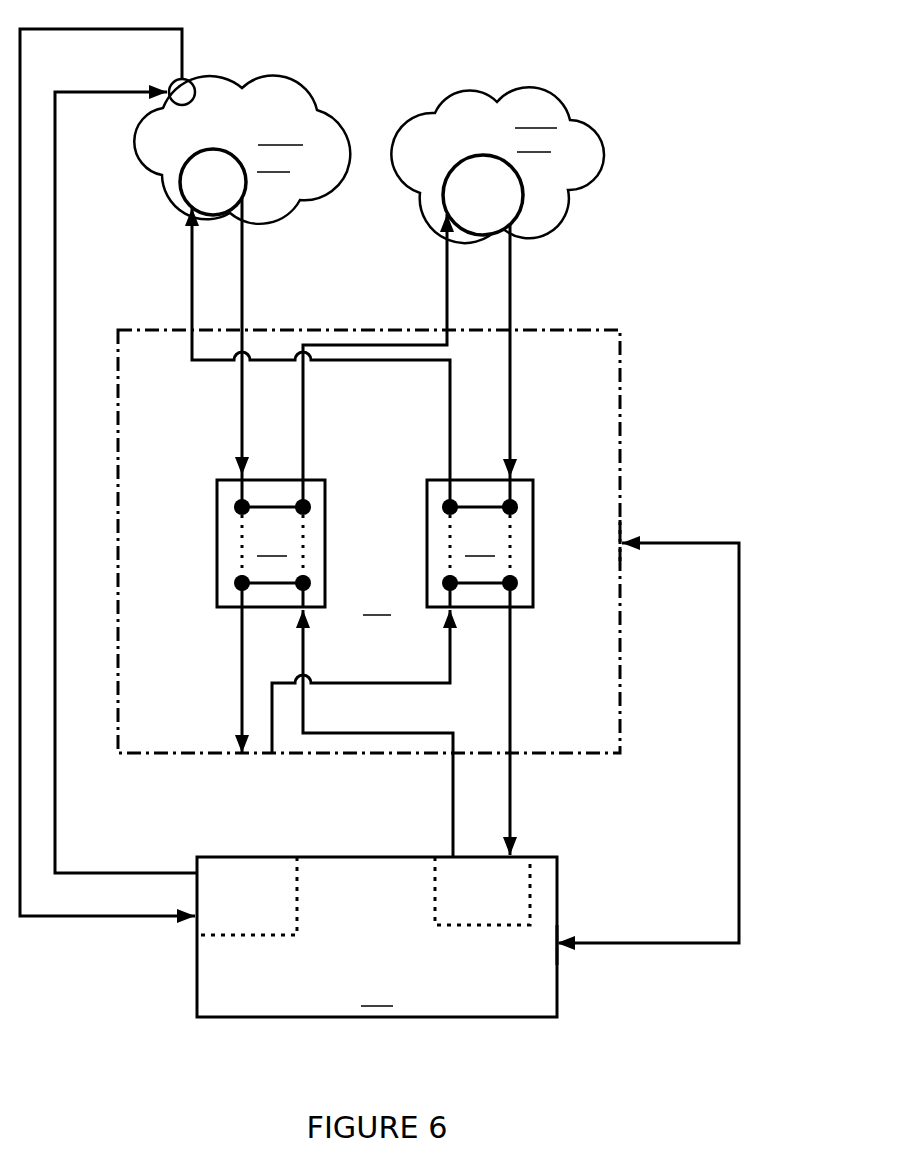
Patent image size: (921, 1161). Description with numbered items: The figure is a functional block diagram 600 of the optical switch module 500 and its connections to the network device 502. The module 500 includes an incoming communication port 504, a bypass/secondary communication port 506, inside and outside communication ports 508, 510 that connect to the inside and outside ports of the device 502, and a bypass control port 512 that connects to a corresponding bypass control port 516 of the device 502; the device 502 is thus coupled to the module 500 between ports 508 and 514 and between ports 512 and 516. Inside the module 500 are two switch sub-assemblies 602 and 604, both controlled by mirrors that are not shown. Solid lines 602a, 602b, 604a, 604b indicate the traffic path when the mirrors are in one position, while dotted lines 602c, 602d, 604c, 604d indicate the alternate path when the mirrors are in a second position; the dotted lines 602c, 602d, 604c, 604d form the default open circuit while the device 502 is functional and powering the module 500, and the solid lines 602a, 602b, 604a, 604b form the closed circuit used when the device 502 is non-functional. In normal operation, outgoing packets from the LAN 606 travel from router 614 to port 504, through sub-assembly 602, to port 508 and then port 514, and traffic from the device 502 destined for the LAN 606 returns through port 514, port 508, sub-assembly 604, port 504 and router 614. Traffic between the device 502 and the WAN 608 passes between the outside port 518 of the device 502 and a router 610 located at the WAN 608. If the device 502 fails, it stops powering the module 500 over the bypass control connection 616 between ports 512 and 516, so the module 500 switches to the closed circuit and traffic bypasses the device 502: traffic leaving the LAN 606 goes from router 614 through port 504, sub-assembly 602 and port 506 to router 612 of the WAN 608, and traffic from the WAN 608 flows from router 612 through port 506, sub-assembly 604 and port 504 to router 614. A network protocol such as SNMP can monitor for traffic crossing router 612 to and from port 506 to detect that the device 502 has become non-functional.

The optical switch module 500 is at (369, 541).
The network device 502 is at (377, 937).
The incoming communication port 504 is at (480, 326).
The bypass/secondary communication port 506 is at (217, 326).
The inside communication port 508 is at (482, 760).
The outside communication port 510 is at (252, 758).
The bypass control port 512 is at (626, 531).
The inside port 514 is at (501, 919).
The bypass control port 516 is at (562, 956).
The outside port 518 is at (253, 884).
The functional block diagram 600 is at (690, 212).
The switch sub-assembly 602 is at (480, 543).
The solid line 602a is at (477, 497).
The solid line 602b is at (482, 590).
The dotted line 602c is at (518, 538).
The dotted line 602d is at (443, 536).
The switch sub-assembly 604 is at (271, 543).
The solid line 604a is at (273, 496).
The solid line 604b is at (268, 590).
The dotted line 604c is at (309, 534).
The dotted line 604d is at (232, 542).
The LAN 606 is at (497, 165).
The WAN 608 is at (242, 149).
The router 610 is at (198, 76).
The router 612 is at (178, 192).
The router 614 is at (455, 157).
The bypass control connection 616 is at (746, 627).